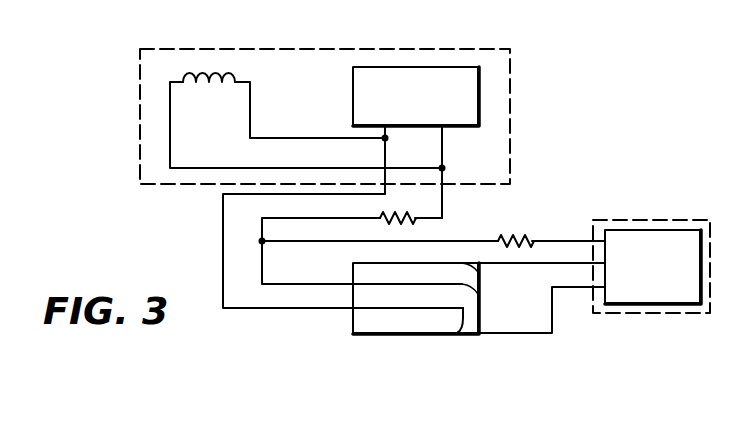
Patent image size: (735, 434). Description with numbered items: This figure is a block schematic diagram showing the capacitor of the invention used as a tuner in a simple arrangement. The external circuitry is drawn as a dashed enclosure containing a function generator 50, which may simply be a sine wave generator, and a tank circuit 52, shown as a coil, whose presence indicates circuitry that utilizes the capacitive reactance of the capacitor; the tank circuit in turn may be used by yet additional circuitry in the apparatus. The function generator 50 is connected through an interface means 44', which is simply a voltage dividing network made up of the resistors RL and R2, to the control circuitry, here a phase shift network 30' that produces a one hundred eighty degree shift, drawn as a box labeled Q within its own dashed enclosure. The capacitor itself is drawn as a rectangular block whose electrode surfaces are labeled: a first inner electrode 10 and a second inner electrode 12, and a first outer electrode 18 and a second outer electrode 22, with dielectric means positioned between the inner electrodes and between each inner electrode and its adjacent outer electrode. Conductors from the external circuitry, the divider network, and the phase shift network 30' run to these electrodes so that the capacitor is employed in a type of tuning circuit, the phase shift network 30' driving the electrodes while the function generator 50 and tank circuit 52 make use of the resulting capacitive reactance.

The function generator 50 is at (353, 78).
The tank circuit 52 is at (206, 83).
The resistor RL is at (398, 208).
The resistor R2 is at (517, 230).
The interface means 44' is at (433, 216).
The phase shift network 30' is at (651, 248).
The second outer electrode 22 is at (478, 277).
The second inner electrode 12 is at (478, 300).
The first outer electrode 18 is at (366, 333).
The first inner electrode 10 is at (458, 337).